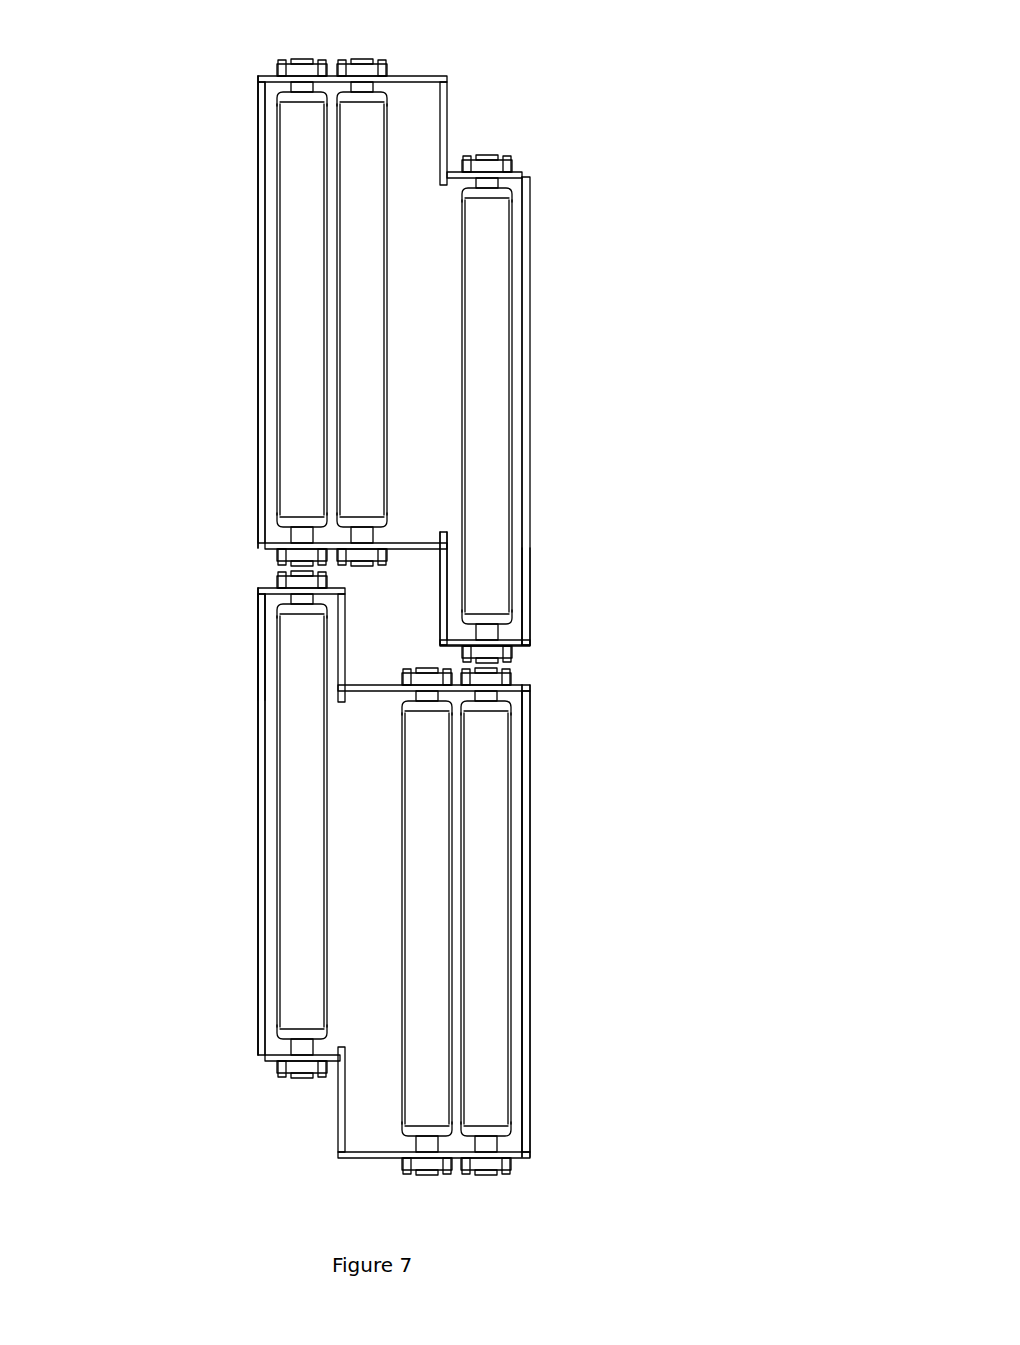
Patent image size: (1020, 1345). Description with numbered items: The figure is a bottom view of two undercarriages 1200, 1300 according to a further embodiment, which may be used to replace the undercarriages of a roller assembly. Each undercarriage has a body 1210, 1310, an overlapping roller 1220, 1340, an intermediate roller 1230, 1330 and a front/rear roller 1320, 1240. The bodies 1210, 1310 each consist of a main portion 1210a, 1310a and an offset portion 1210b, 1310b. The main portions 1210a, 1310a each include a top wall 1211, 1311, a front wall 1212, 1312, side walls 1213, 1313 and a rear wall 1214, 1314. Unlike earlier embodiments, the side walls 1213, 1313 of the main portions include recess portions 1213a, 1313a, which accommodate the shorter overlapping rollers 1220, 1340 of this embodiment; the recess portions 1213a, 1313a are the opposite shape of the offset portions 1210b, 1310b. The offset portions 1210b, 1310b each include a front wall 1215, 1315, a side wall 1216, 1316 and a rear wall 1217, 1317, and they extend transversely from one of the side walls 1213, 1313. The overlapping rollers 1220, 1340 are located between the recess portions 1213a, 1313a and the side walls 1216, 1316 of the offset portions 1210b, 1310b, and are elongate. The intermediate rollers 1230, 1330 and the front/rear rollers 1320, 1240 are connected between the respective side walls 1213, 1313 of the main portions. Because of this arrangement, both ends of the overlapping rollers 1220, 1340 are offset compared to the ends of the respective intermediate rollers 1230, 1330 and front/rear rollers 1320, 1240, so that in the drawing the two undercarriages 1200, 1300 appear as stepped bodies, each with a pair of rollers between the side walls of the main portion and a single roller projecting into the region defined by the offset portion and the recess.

The undercarriage 1200 is at (708, 82).
The body 1210 is at (646, 330).
The main portion 1210a is at (246, 246).
The offset portion 1210b is at (606, 564).
The top wall 1211 is at (449, 281).
The front wall 1212 is at (527, 230).
The side wall 1213 is at (268, 76).
The recess portion 1213a is at (511, 80).
The rear wall 1214 is at (258, 320).
The front wall 1215 is at (530, 598).
The side wall 1216 is at (505, 637).
The rear wall 1217 is at (444, 595).
The overlapping roller 1220 is at (503, 477).
The intermediate roller 1230 is at (360, 165).
The front/rear roller 1240 is at (305, 137).
The undercarriage 1300 is at (719, 1134).
The body 1310 is at (672, 889).
The main portion 1310a is at (540, 889).
The offset portion 1310b is at (182, 630).
The top wall 1311 is at (386, 789).
The front wall 1312 is at (525, 780).
The side wall 1313 is at (520, 684).
The recess portion 1313a is at (276, 1121).
The rear wall 1314 is at (258, 757).
The front wall 1315 is at (345, 648).
The side wall 1316 is at (272, 586).
The rear wall 1317 is at (258, 625).
The front/rear roller 1320 is at (487, 961).
The intermediate roller 1330 is at (415, 1062).
The overlapping roller 1340 is at (283, 868).